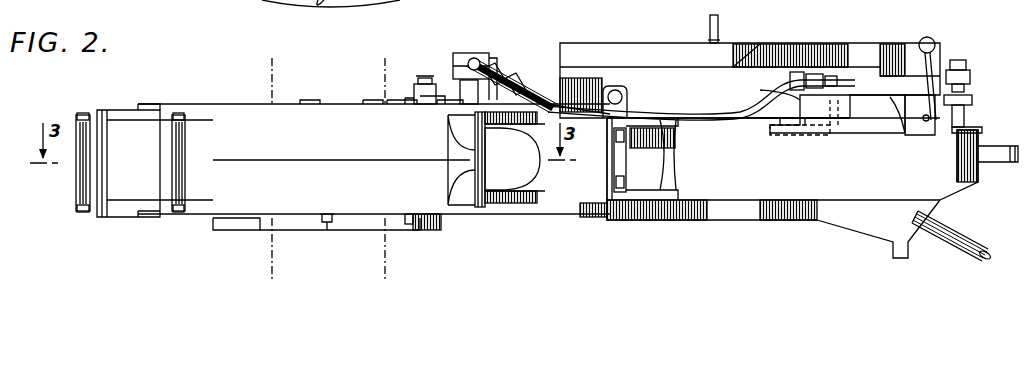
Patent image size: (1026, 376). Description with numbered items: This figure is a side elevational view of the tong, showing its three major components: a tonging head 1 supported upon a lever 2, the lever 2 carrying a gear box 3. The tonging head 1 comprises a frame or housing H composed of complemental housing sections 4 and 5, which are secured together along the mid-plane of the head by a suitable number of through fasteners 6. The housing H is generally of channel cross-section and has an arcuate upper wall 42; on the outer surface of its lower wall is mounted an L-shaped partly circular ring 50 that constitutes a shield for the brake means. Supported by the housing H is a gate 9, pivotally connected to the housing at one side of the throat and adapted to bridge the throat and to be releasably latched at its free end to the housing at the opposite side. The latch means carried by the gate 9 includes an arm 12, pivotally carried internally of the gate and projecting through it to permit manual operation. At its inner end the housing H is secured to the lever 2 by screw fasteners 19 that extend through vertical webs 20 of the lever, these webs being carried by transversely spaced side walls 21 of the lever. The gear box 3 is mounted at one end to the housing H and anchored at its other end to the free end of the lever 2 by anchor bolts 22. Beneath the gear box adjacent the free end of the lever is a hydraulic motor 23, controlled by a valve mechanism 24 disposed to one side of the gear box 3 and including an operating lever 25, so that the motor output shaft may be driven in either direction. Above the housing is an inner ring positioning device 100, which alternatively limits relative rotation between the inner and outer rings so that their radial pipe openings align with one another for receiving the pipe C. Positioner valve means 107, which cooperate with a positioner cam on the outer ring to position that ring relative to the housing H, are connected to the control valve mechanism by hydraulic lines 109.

The tonging head 1 is at (228, 122).
The lever 2 is at (750, 180).
The gear box 3 is at (828, 42).
The housing section 4 is at (322, 140).
The housing section 5 is at (326, 190).
The through fasteners 6 is at (327, 229).
The gate 9 is at (116, 110).
The latch arm 12 is at (78, 187).
The screw fasteners 19 is at (626, 140).
The vertical webs 20 is at (612, 168).
The side walls 21 is at (678, 130).
The anchor bolts 22 is at (970, 72).
The hydraulic motor 23 is at (790, 138).
The valve mechanism 24 is at (890, 125).
The operating lever 25 is at (926, 38).
The upper wall 42 is at (300, 6).
The L-shaped partly circular ring 50 is at (427, 231).
The inner ring positioning device 100 is at (406, 96).
The positioner valve means 107 is at (480, 54).
The hydraulic lines 109 is at (578, 112).
The pipe C is at (271, 72).
The frame or housing H is at (220, 203).